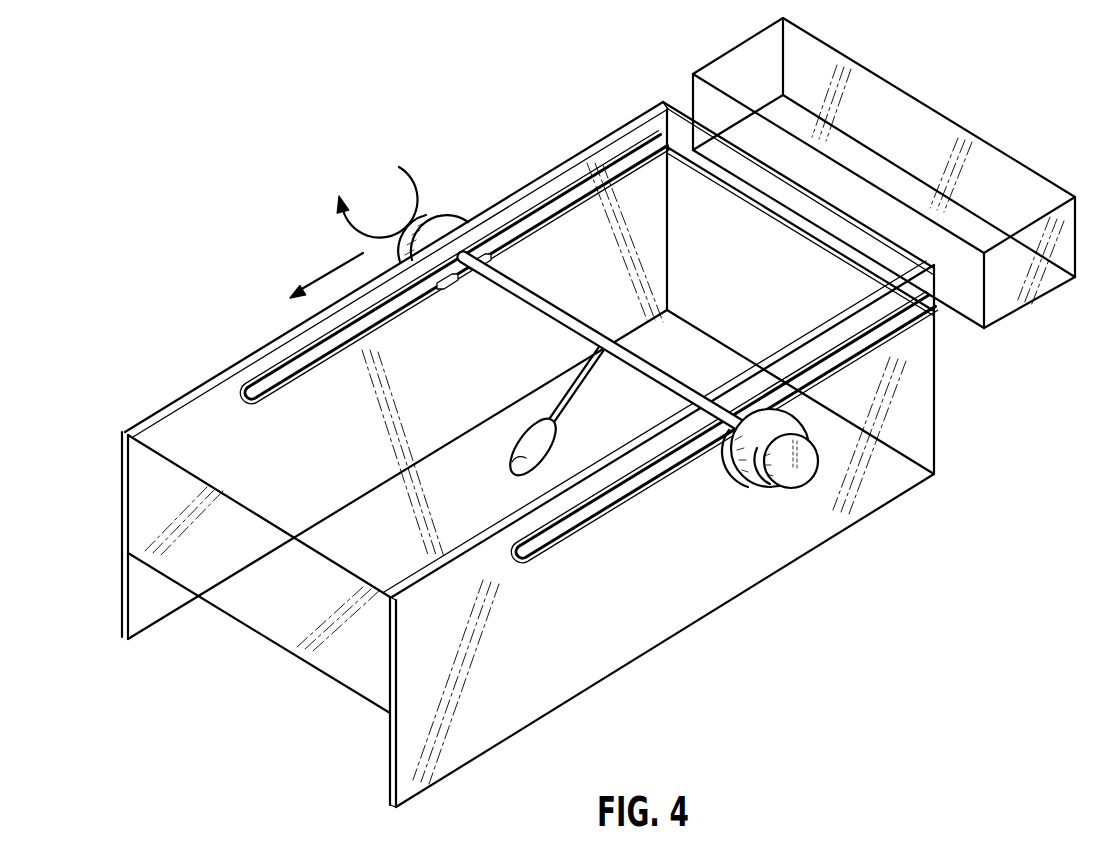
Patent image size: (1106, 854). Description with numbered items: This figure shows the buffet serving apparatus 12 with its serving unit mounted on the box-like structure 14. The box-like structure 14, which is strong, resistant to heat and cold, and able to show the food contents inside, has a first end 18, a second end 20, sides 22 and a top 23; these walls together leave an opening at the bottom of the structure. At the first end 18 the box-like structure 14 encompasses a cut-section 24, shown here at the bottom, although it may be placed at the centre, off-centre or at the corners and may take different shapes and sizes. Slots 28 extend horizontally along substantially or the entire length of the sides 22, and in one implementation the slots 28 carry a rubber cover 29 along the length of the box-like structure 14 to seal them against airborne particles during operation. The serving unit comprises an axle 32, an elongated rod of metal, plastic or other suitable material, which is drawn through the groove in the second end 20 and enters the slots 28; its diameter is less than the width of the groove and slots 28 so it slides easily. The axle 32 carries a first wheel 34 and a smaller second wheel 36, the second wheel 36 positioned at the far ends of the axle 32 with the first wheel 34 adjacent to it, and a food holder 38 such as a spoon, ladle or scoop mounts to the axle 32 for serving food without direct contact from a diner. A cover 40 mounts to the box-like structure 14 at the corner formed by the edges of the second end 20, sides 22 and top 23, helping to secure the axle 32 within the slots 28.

The buffet serving apparatus 12 is at (250, 146).
The box-like structure 14 is at (558, 665).
The first end 18 is at (258, 616).
The second end 20 is at (935, 384).
The sides 22 is at (472, 735).
The top 23 is at (203, 430).
The cut-section 24 is at (308, 705).
The slots 28 is at (312, 357).
The rubber cover 29 is at (865, 360).
The axle 32 is at (640, 372).
The first wheel 34 is at (740, 483).
The second wheel 36 is at (802, 459).
The food holder 38 is at (527, 450).
The cover 40 is at (893, 106).